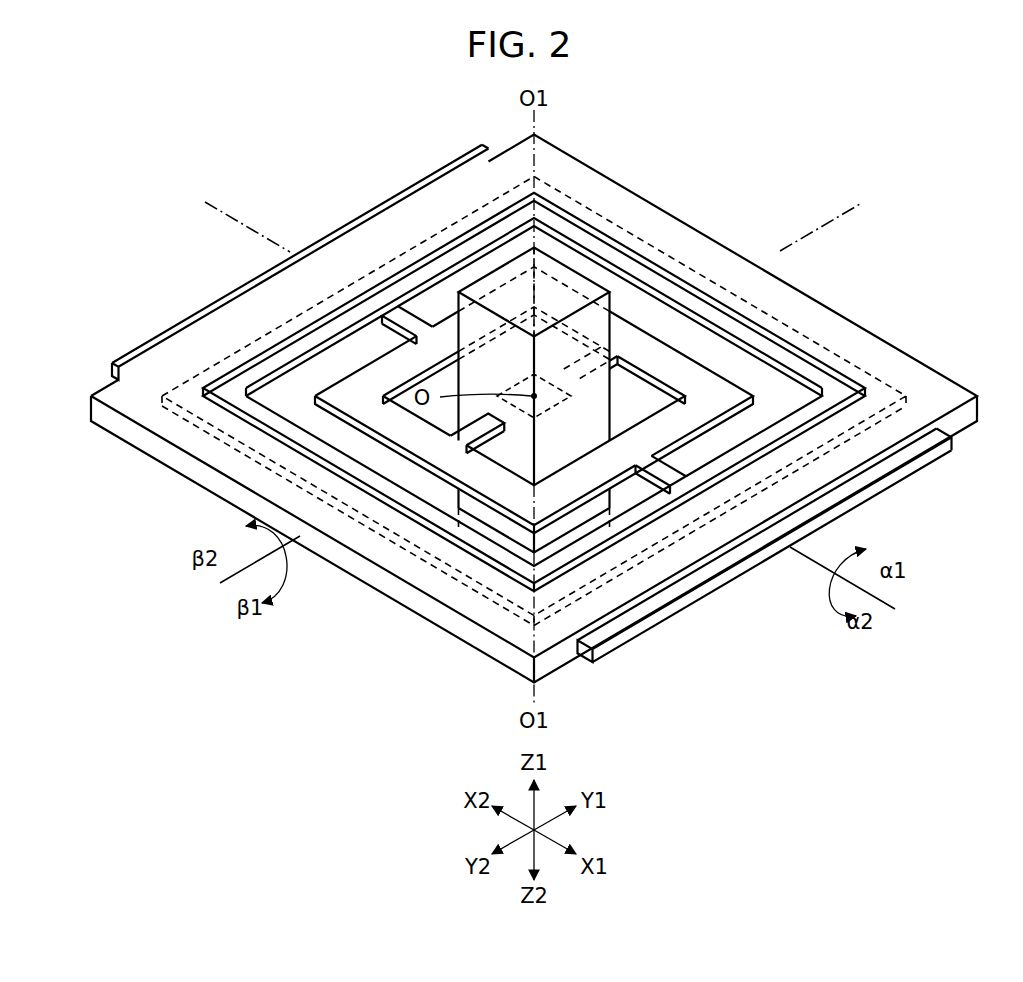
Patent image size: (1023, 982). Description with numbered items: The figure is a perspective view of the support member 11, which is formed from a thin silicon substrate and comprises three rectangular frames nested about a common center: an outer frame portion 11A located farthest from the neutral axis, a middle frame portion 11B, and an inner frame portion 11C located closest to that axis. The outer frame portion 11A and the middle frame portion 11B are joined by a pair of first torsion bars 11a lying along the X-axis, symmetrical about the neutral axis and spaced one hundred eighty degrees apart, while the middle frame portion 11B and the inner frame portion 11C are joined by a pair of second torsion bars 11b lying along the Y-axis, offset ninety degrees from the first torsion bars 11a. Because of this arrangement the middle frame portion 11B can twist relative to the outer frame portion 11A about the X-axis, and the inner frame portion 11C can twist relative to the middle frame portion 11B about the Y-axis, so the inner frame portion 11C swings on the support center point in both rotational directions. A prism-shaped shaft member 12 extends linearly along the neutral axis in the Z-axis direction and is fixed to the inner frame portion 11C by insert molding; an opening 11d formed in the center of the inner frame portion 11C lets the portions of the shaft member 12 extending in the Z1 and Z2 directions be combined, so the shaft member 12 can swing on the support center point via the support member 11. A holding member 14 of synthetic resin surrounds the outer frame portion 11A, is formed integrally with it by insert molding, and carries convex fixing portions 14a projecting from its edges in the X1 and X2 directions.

The support member 11 is at (938, 183).
The outer frame portion 11A is at (585, 240).
The middle frame portion 11B is at (690, 357).
The inner frame portion 11C is at (675, 365).
The first torsion bars 11a is at (408, 318).
The second torsion bars 11b is at (607, 360).
The opening 11d is at (605, 345).
The shaft member 12 is at (500, 268).
The holding member 14 is at (930, 375).
The convex fixing portions 14a is at (205, 312).